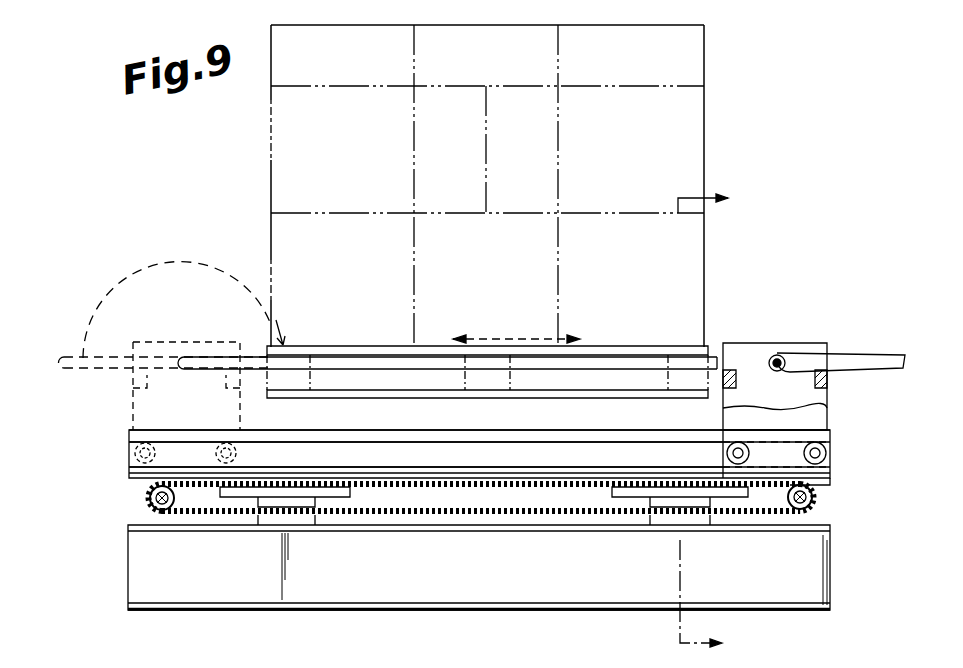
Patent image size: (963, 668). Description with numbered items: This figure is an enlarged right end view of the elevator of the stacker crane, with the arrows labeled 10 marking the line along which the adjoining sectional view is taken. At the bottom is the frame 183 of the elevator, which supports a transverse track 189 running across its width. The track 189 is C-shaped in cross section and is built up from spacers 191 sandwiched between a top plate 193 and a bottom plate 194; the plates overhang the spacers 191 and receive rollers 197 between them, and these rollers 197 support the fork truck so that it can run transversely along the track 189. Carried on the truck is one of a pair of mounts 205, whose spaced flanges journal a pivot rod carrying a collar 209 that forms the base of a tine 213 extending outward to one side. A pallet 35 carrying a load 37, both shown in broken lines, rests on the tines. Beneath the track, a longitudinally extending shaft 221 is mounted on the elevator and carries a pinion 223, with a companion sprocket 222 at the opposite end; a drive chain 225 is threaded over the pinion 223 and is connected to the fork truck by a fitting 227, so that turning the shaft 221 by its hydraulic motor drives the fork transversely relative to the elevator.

The section line 10 is at (719, 422).
The pallet 35 is at (364, 400).
The stack of articles 37 is at (268, 150).
The frame 183 is at (200, 612).
The transverse track 189 is at (462, 427).
The spacers 191 is at (548, 452).
The top plate 193 is at (630, 440).
The bottom plate 194 is at (455, 472).
The rollers 197 is at (252, 432).
The mounts 205 is at (786, 344).
The collars 209 is at (775, 358).
The tines 213 is at (845, 355).
The shafts 221 is at (150, 506).
The sprocket 222 is at (812, 497).
The pinions 223 is at (172, 517).
The drive chains 225 is at (423, 512).
The fittings 227 is at (836, 486).